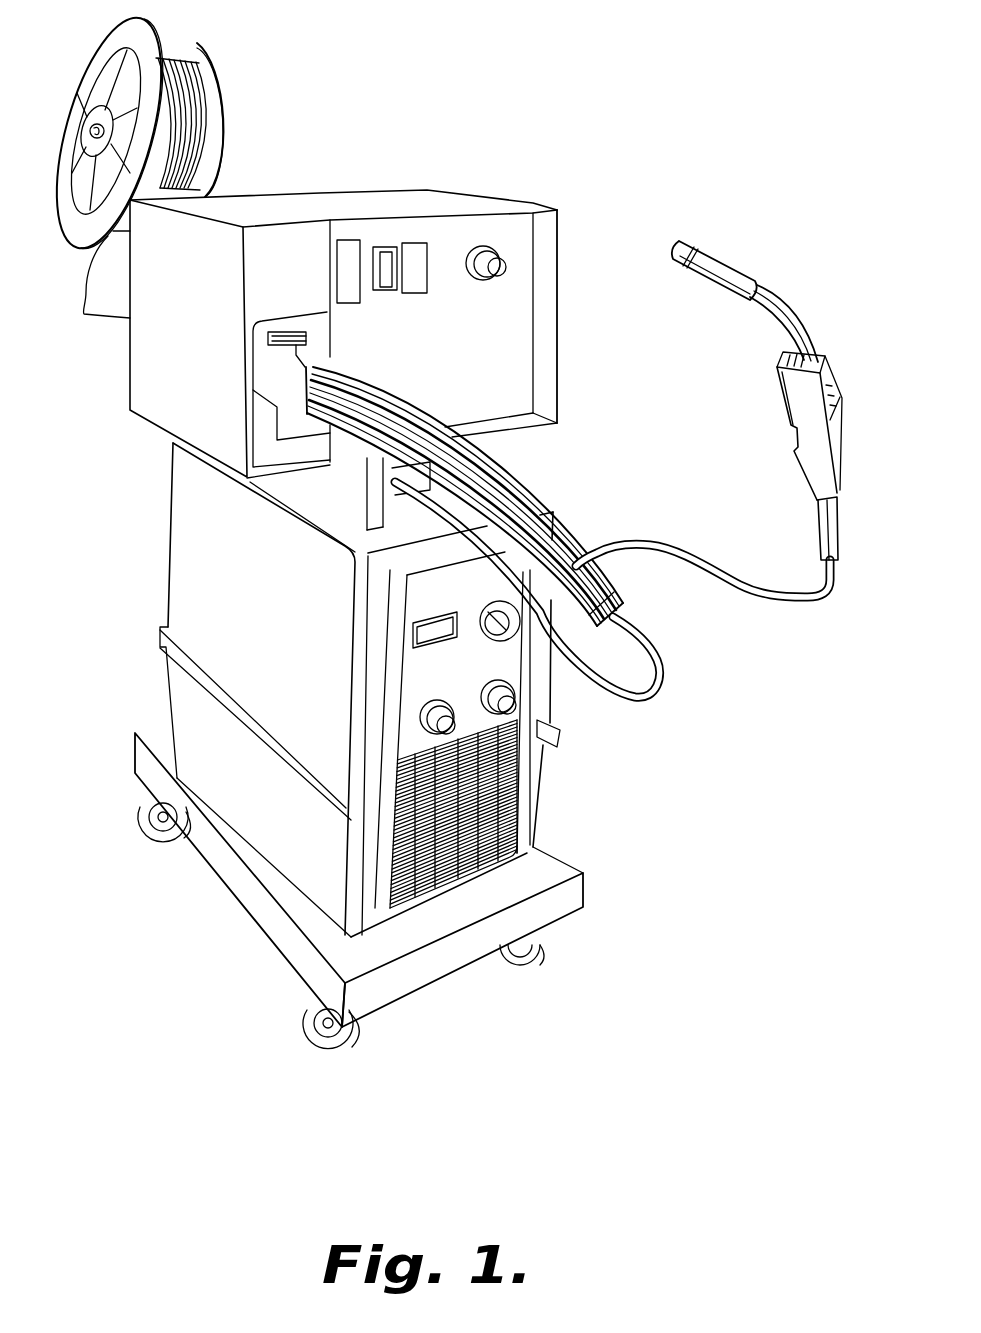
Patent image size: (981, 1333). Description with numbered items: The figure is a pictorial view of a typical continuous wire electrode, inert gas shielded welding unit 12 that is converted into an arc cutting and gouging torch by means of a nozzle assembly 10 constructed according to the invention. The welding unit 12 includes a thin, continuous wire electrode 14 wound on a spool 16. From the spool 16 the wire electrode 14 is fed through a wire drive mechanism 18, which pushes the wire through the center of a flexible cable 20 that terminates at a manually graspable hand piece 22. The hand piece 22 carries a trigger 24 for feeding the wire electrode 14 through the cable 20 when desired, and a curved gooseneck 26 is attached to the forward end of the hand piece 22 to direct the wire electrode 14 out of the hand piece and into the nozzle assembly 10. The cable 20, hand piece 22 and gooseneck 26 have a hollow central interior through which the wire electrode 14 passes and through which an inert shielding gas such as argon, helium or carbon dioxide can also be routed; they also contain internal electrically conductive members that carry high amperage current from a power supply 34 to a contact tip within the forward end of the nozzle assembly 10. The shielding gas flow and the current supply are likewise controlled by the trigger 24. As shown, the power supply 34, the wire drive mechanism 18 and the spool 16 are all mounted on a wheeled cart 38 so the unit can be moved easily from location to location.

The nozzle assembly 10 is at (737, 245).
The welding unit 12 is at (86, 364).
The wire electrode 14 is at (85, 313).
The spool 16 is at (110, 40).
The wire drive mechanism 18 is at (157, 412).
The flexible cable 20 is at (662, 688).
The hand piece 22 is at (838, 437).
The trigger 24 is at (793, 440).
The gooseneck 26 is at (783, 307).
The power supply 34 is at (167, 577).
The wheeled cart 38 is at (577, 898).